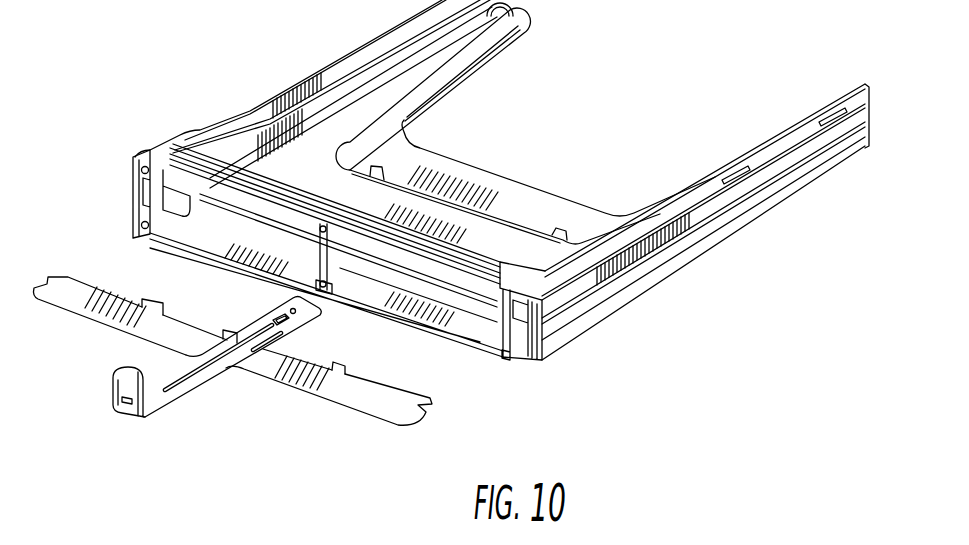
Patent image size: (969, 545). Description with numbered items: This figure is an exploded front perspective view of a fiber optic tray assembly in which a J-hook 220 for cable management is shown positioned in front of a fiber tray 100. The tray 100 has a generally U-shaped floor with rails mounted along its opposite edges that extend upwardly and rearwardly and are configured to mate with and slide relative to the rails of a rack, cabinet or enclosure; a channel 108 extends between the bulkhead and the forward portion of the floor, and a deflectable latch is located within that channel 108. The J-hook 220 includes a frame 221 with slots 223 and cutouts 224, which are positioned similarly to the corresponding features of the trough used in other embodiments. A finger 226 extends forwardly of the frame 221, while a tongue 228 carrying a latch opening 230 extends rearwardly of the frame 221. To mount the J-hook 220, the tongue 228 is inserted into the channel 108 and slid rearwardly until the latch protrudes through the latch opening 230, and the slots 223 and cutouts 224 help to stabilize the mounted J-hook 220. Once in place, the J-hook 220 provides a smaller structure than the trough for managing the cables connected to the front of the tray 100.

The fiber tray 100 is at (712, 263).
The channel 108 is at (388, 273).
The J-hook 220 is at (267, 348).
The frame 221 is at (272, 362).
The slots 223 is at (157, 303).
The cutouts 224 is at (62, 278).
The finger 226 is at (127, 380).
The tongue 228 is at (290, 308).
The latch opening 230 is at (290, 321).